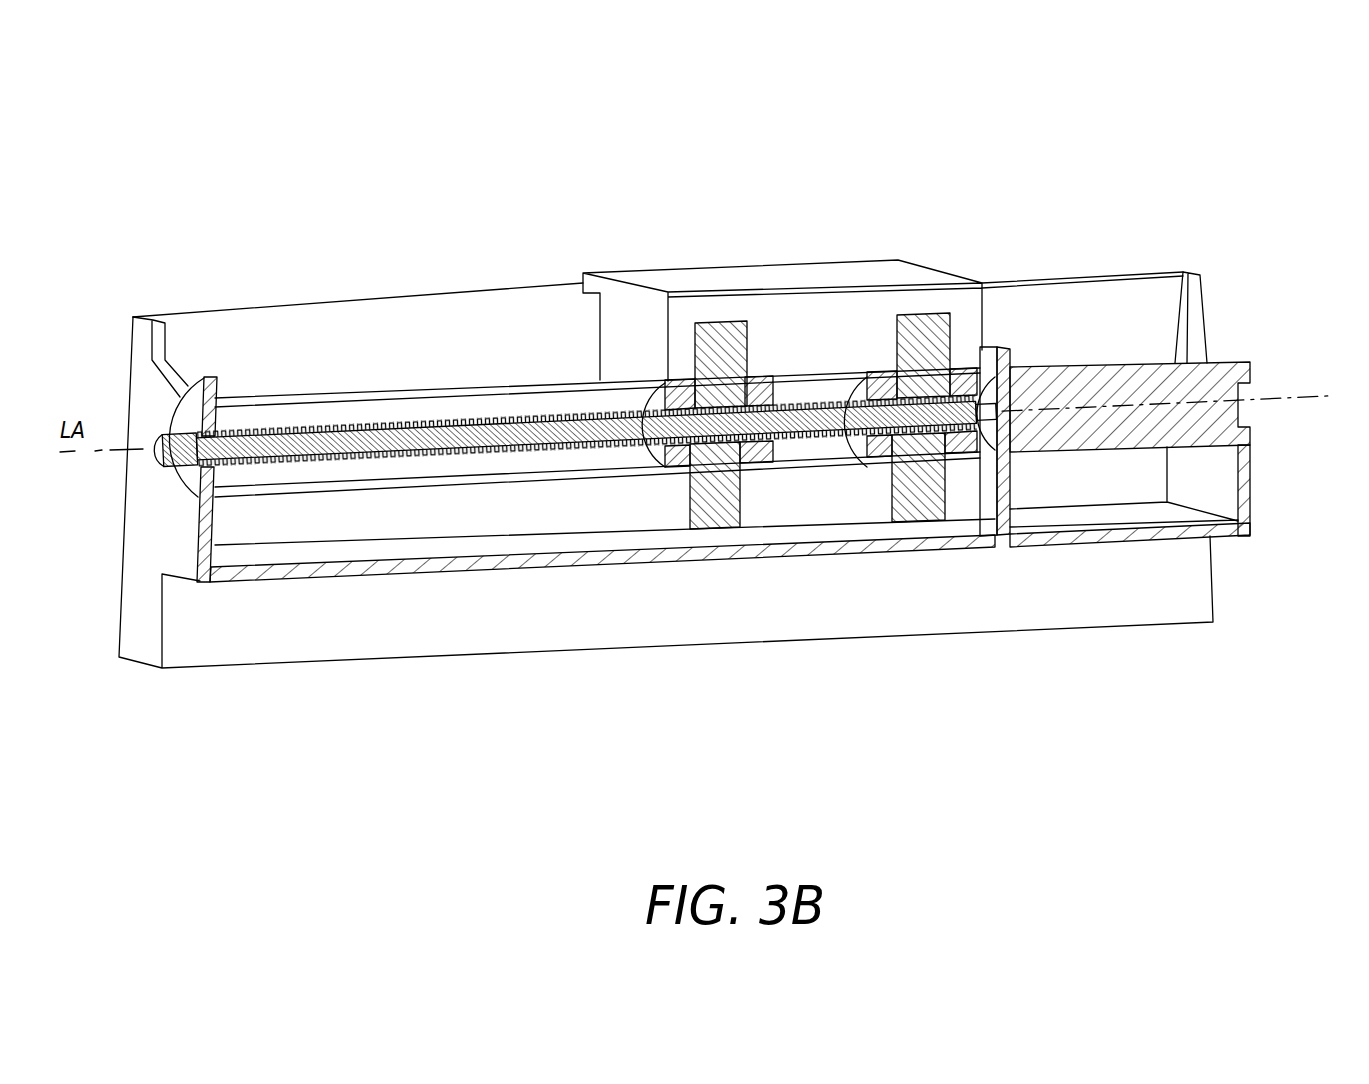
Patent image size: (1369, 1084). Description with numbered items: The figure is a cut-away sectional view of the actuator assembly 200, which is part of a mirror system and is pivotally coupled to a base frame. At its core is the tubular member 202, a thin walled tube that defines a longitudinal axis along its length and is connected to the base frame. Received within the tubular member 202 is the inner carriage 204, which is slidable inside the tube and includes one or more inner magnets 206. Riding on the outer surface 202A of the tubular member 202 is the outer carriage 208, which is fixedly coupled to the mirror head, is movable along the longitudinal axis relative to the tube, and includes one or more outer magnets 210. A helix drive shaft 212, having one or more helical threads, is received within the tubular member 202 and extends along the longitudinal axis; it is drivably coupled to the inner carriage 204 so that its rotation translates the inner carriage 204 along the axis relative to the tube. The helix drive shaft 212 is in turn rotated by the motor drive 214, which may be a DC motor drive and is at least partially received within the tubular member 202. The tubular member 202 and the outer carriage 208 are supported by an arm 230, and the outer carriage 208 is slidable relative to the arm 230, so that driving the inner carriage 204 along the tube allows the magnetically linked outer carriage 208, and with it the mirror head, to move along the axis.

The actuator assembly 200 is at (1135, 111).
The tubular member 202 is at (505, 360).
The outer surface 202A is at (407, 390).
The inner carriage 204 is at (758, 450).
The inner magnets 206 is at (753, 390).
The outer carriage 208 is at (833, 278).
The outer magnets 210 is at (713, 517).
The helix drive shaft 212 is at (280, 397).
The motor drive 214 is at (1202, 395).
The arm 230 is at (143, 640).